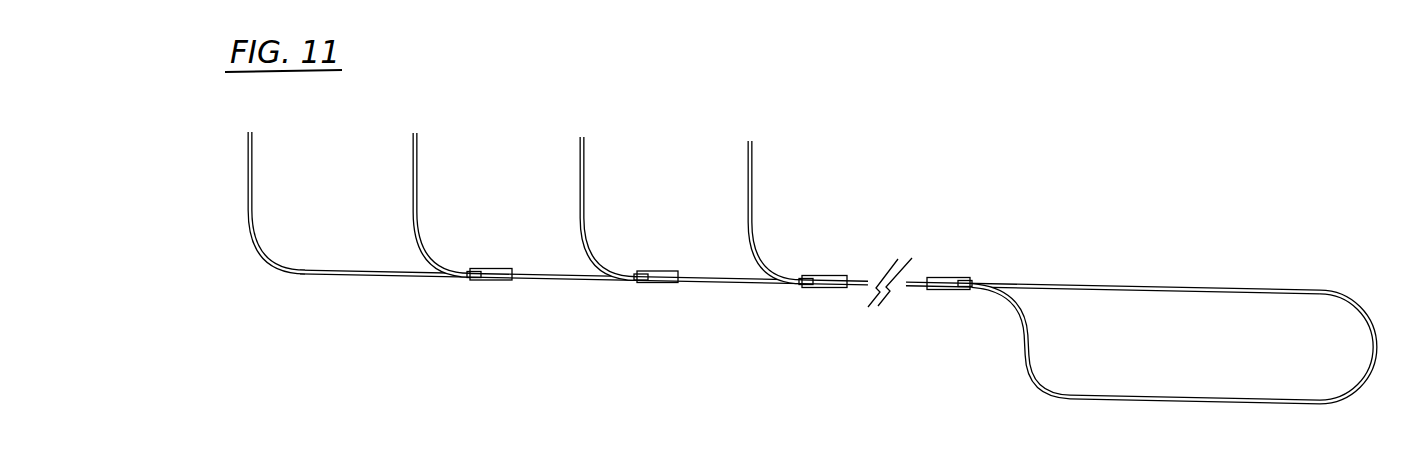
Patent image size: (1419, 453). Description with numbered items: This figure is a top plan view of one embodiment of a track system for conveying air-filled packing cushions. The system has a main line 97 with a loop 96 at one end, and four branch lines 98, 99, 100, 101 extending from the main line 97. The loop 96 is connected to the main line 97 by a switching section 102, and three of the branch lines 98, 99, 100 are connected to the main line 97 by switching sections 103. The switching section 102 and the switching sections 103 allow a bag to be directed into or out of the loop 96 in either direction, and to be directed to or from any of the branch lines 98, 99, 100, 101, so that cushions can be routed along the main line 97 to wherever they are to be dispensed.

The loop 96 is at (1182, 302).
The main line 97 is at (862, 286).
The branch line 98 is at (748, 180).
The branch line 99 is at (582, 180).
The branch line 100 is at (414, 168).
The branch line 101 is at (249, 180).
The switching section 102 is at (950, 278).
The switching section 103 is at (493, 285).